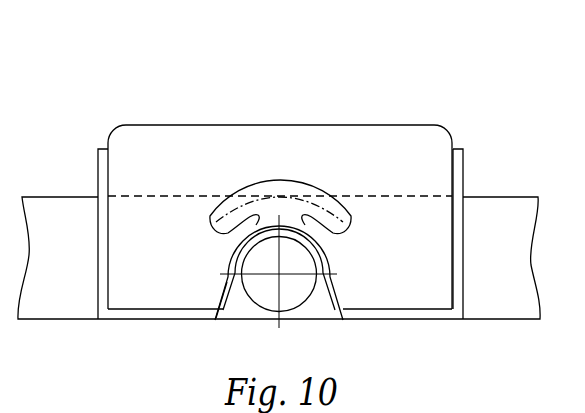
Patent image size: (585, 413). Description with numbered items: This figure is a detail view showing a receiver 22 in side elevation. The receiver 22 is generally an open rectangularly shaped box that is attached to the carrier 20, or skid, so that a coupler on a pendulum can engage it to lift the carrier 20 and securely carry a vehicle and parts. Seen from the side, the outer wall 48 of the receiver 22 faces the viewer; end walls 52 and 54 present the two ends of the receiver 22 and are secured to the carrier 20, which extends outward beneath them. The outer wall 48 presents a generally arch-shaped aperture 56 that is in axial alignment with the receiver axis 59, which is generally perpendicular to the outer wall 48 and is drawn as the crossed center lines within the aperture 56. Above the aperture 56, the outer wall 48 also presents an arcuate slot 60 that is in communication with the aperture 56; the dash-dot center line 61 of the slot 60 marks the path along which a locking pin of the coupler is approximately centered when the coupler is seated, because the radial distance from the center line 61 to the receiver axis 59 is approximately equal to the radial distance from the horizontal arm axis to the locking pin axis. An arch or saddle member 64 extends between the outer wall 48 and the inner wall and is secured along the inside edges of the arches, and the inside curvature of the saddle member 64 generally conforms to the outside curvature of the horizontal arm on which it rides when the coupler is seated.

The carrier 20 is at (508, 196).
The receiver 22 is at (283, 69).
The outer wall 48 is at (345, 125).
The end wall 52 is at (459, 164).
The end wall 54 is at (103, 146).
The arch-shaped aperture 56 is at (332, 265).
The receiver axis 59 is at (283, 275).
The arcuate slot 60 is at (302, 178).
The center line 61 is at (223, 213).
The saddle member 64 is at (230, 301).